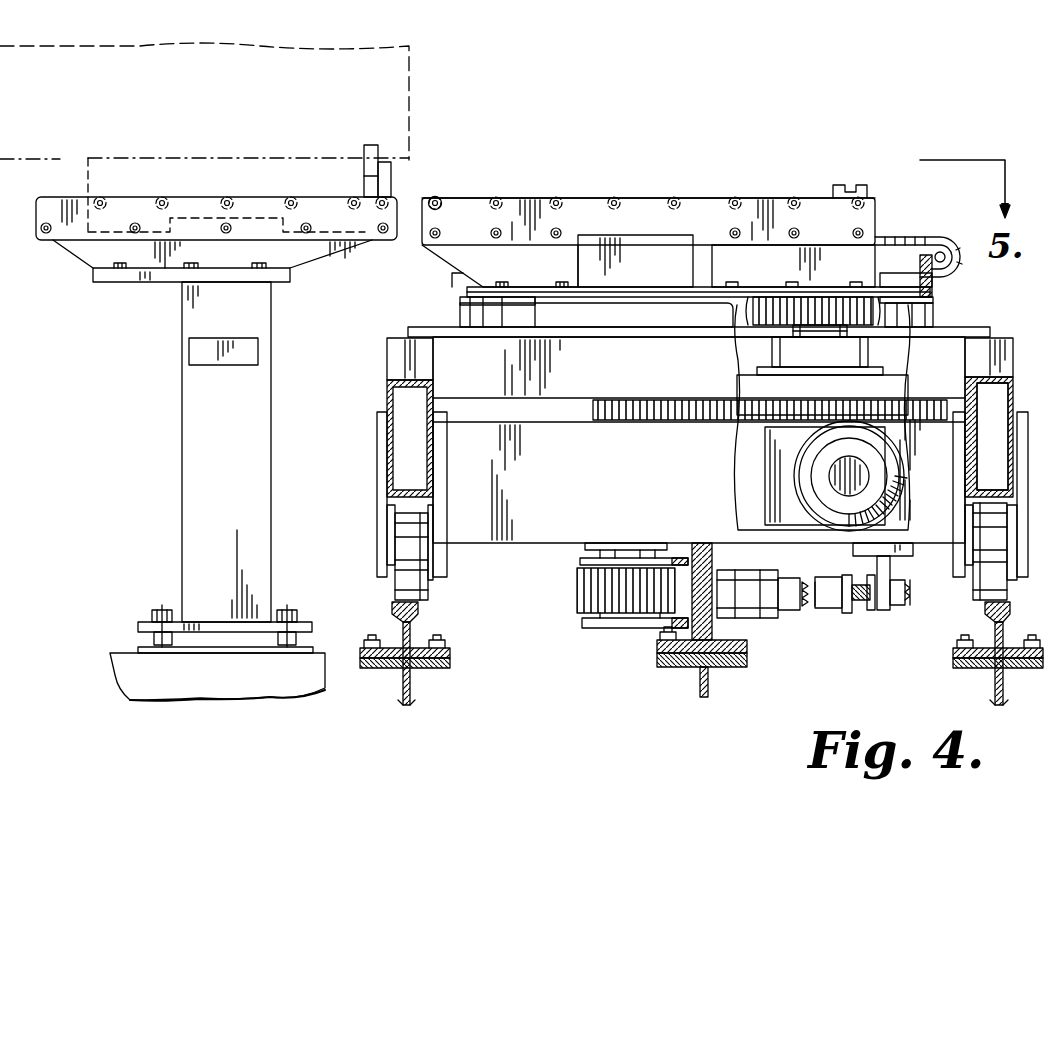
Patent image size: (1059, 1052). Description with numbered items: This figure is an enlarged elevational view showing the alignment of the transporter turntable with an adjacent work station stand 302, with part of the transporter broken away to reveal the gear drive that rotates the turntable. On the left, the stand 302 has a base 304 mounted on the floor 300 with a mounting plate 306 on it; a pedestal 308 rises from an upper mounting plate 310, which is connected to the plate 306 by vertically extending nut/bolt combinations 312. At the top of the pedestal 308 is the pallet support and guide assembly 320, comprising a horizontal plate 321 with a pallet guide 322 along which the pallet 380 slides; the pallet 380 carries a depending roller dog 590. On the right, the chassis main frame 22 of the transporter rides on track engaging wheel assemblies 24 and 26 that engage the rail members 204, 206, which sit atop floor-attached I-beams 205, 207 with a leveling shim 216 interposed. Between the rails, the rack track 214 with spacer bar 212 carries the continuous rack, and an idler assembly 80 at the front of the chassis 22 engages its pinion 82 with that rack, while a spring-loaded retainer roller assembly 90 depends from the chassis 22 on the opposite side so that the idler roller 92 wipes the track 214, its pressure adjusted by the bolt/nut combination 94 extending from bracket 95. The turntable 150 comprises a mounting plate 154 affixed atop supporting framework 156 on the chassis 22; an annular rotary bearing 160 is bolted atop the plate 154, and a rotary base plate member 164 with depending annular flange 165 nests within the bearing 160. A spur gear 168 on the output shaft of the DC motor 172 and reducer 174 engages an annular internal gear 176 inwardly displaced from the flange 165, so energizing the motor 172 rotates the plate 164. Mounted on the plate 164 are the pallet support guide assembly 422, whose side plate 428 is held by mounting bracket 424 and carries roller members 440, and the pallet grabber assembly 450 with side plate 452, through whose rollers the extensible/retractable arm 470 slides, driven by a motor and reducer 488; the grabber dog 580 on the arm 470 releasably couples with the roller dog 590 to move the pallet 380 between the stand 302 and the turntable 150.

The chassis main frame 22 is at (387, 404).
The track engaging wheel assembly 24 is at (1015, 590).
The track engaging wheel assembly 26 is at (437, 590).
The idler assembly 80 is at (571, 606).
The idler pinion 82 is at (577, 578).
The spring-loaded retainer roller assembly 90 is at (790, 660).
The idler roller 92 is at (737, 605).
The bolt/nut combination 94 is at (905, 606).
The bracket 95 is at (892, 572).
The rotary turntable 150 is at (947, 301).
The mounting plate 154 is at (960, 334).
The supporting framework 156 is at (991, 436).
The annular rotary bearing 160 is at (976, 322).
The rotary base plate member 164 is at (464, 290).
The depending annular flange 165 is at (468, 300).
The spur gear 168 is at (796, 316).
The DC motor 172 is at (767, 481).
The reducer 174 is at (820, 356).
The annular internal gear 176 is at (772, 296).
The rail member 204 is at (997, 632).
The I-beam 205 is at (412, 697).
The rail member 206 is at (412, 630).
The I-beam 207 is at (995, 694).
The spacer bar 212 is at (648, 660).
The rack track 214 is at (702, 550).
The rack / leveling shim 216 is at (452, 660).
The floor 300 is at (205, 700).
The work station stand 302 is at (124, 420).
The base 304 is at (110, 655).
The mounting plate 306 is at (150, 648).
The pedestal 308 is at (226, 452).
The upper mounting plate 310 is at (138, 627).
The nut/bolt combinations 312 is at (166, 610).
The pallet support and guide assembly 320 is at (51, 254).
The horizontal plate 321 is at (130, 282).
The pallet guide 322 is at (70, 194).
The pallet 380 is at (226, 197).
The pallet support guide assembly 422 is at (586, 174).
The mounting bracket 424 is at (500, 266).
The side rail or plate 428 is at (648, 221).
The roller member 440 is at (438, 198).
The pallet grabber assembly 450 is at (921, 218).
The side rail or plate 452 is at (452, 276).
The extensible/retractable arm 470 is at (893, 246).
The reducer 488 is at (640, 261).
The grabber dog 580 is at (843, 184).
The roller dog 590 is at (395, 184).